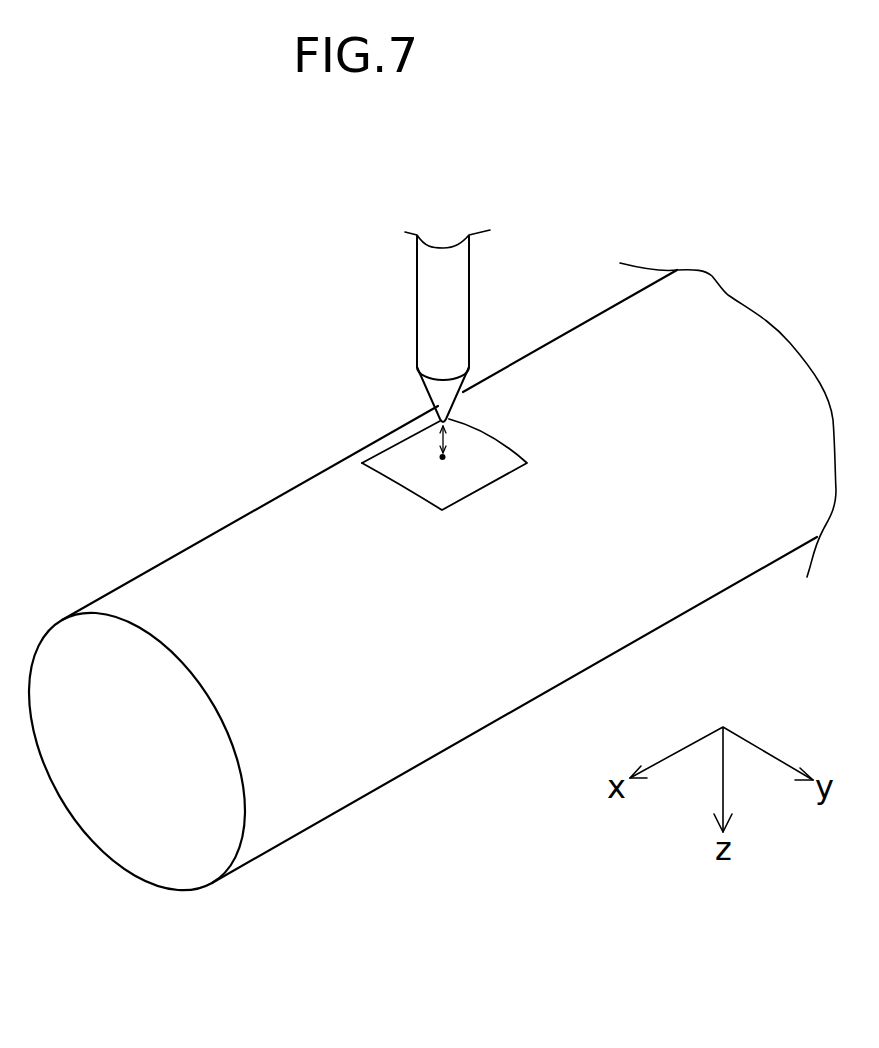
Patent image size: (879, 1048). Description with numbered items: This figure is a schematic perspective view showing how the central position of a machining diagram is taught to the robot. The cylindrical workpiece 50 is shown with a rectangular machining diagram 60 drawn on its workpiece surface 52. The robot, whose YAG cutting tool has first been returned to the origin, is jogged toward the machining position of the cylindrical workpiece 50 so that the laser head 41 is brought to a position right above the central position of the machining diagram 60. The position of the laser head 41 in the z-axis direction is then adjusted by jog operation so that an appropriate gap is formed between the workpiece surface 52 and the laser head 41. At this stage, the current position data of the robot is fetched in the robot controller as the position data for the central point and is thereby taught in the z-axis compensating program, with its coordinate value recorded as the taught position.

The laser head 41 is at (427, 332).
The cylindrical workpiece 50 is at (358, 827).
The workpiece surface 52 is at (285, 573).
The machining diagram 60 is at (458, 512).